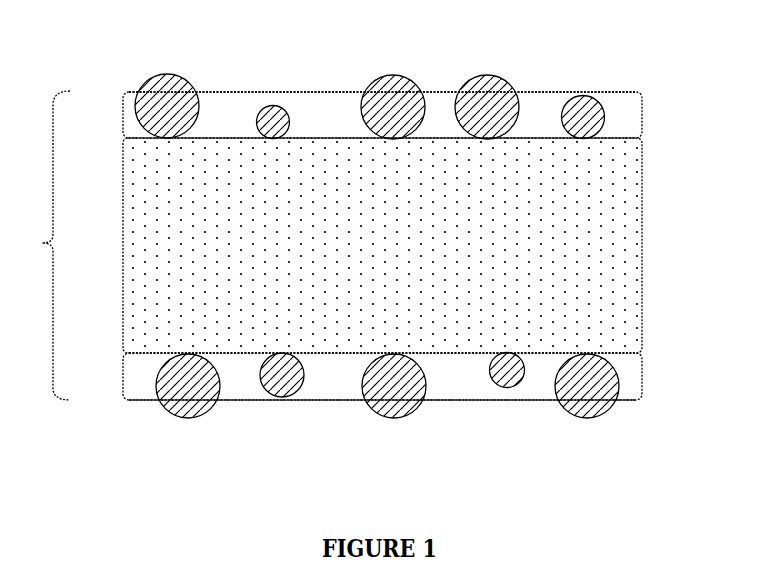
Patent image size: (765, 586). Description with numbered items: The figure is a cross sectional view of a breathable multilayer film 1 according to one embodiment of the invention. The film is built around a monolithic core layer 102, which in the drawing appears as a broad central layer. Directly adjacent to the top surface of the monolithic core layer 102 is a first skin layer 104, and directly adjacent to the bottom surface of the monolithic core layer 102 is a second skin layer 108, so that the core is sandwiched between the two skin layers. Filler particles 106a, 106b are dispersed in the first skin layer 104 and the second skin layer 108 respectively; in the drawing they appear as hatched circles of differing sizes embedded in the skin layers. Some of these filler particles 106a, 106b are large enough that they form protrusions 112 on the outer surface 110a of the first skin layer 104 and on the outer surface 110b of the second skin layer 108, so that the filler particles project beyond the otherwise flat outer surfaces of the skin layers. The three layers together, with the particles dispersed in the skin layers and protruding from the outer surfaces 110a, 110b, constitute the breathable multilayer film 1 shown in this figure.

The breathable multilayer film 1 is at (45, 245).
The monolithic core layer 102 is at (640, 252).
The first skin layer 104 is at (640, 110).
The filler particles 106a is at (207, 102).
The filler particles 106b is at (219, 393).
The second skin layer 108 is at (533, 383).
The outer surface of the first skin layer 110a is at (332, 92).
The outer surface of the second skin layer 110b is at (332, 400).
The protrusions 112 is at (488, 75).